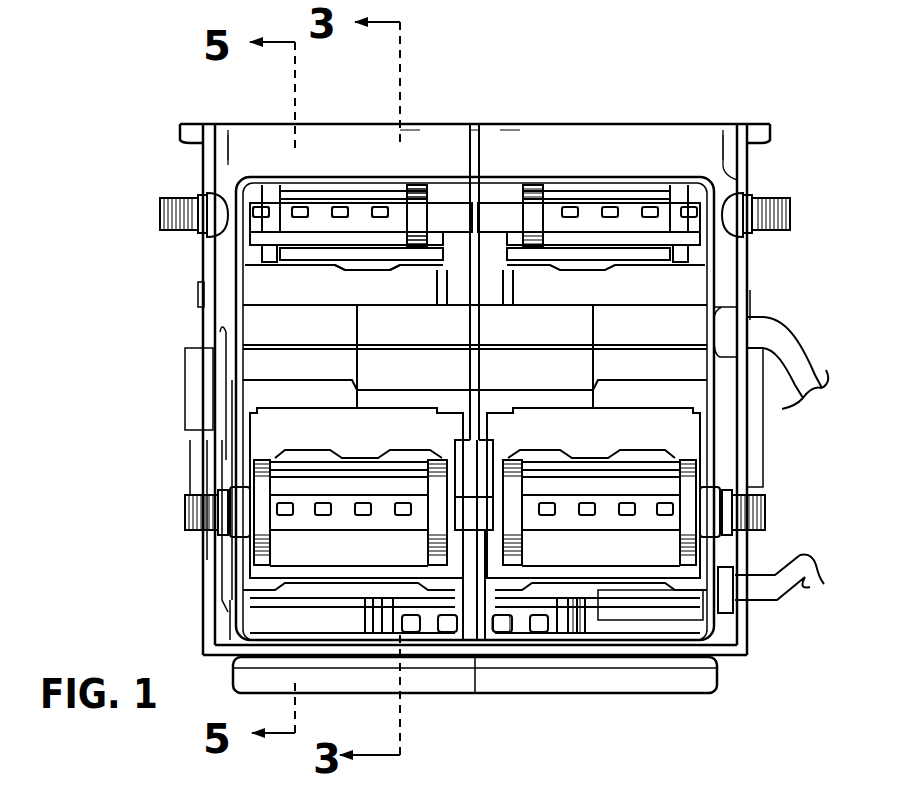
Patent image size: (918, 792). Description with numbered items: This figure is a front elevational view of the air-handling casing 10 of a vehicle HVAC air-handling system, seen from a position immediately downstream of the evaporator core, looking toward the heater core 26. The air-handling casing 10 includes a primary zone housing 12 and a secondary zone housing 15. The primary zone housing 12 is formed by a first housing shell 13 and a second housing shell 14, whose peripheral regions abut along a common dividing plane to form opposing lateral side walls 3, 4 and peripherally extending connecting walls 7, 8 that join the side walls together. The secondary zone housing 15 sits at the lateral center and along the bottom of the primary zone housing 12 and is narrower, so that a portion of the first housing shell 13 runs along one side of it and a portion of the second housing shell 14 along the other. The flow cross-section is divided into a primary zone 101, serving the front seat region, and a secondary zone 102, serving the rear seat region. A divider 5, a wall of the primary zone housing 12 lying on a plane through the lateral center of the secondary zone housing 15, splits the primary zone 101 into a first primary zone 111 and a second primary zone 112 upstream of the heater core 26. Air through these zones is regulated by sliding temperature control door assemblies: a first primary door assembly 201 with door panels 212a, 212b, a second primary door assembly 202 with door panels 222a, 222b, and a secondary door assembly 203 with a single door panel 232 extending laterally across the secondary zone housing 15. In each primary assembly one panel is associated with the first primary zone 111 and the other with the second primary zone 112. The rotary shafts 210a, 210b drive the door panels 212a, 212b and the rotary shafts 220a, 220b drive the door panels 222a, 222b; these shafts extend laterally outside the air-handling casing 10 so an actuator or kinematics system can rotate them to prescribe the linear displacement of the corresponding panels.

The air-handling casing 10 is at (195, 86).
The first housing shell 13 is at (243, 133).
The connecting wall 7 is at (410, 133).
The divider 5 is at (470, 133).
The connecting wall 8 is at (510, 133).
The second housing shell 14 is at (708, 133).
The primary zone housing 12 is at (753, 116).
The lateral side wall 3 is at (205, 162).
The lateral side wall 4 is at (748, 182).
The primary zone 101 is at (370, 188).
The first primary zone 111 is at (358, 193).
The second primary zone 112 is at (565, 190).
The second primary door assembly 202 is at (337, 195).
The rotary shaft 220a is at (164, 211).
The rotary shaft 220b is at (790, 213).
The door panel 222a is at (313, 238).
The door panel 222b is at (673, 238).
The heater core 26 is at (268, 437).
The first primary door assembly 201 is at (290, 538).
The rotary shaft 210a is at (188, 512).
The rotary shaft 210b is at (767, 506).
The door panel 232 is at (530, 598).
The door panel 212a is at (308, 558).
The door panel 212b is at (657, 550).
The secondary door assembly 203 is at (427, 628).
The secondary zone 102 is at (517, 628).
The secondary zone housing 15 is at (576, 628).